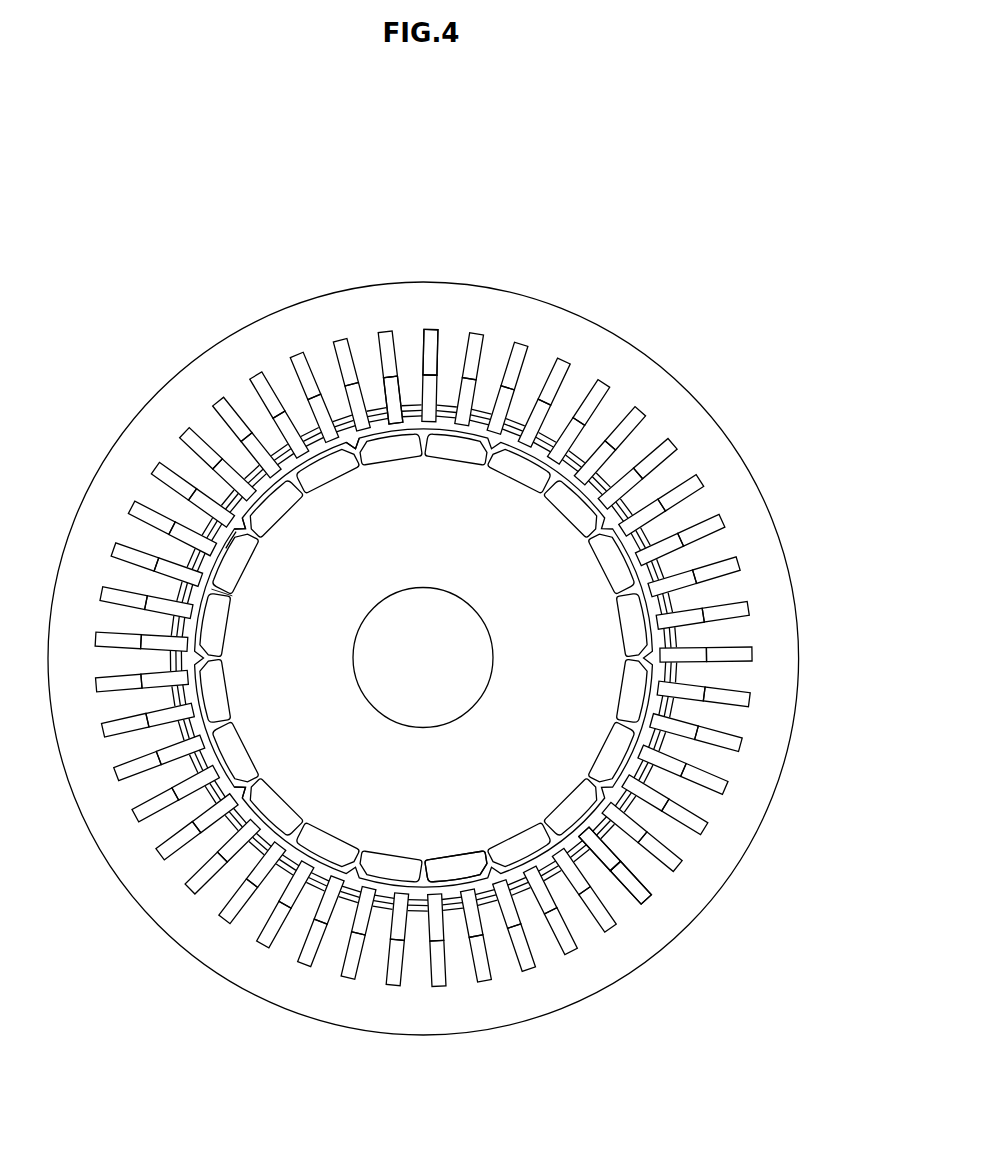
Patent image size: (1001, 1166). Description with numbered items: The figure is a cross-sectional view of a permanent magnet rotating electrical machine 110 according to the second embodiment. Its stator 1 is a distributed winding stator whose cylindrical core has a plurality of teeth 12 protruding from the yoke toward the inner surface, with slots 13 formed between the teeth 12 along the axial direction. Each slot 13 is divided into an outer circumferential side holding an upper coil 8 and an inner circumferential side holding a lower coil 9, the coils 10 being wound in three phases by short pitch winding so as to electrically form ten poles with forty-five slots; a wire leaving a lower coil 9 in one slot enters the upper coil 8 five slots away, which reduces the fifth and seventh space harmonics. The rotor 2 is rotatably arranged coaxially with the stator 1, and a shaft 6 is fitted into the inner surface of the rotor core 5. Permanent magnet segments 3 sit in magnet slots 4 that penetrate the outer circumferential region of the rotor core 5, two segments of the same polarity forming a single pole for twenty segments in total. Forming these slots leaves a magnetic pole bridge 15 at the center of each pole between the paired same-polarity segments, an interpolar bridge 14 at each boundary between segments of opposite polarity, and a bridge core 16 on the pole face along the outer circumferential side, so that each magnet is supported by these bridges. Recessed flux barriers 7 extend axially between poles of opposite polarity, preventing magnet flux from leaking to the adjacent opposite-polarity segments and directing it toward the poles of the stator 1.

The permanent magnet rotating electrical machine 110 is at (683, 138).
The stator 1 is at (560, 298).
The rotor 2 is at (664, 710).
The permanent magnet segment 3 is at (462, 867).
The magnet slot 4 is at (353, 870).
The rotor core 5 is at (530, 585).
The shaft 6 is at (380, 673).
The flux barrier 7 is at (233, 792).
The upper coil 8 is at (430, 348).
The lower coil 9 is at (391, 390).
The coil 10 is at (338, 157).
The teeth 12 is at (675, 838).
The slot 13 is at (648, 902).
The interpolar bridge 14 is at (240, 530).
The magnetic pole bridge 15 is at (217, 590).
The bridge core on pole face 16 is at (224, 540).